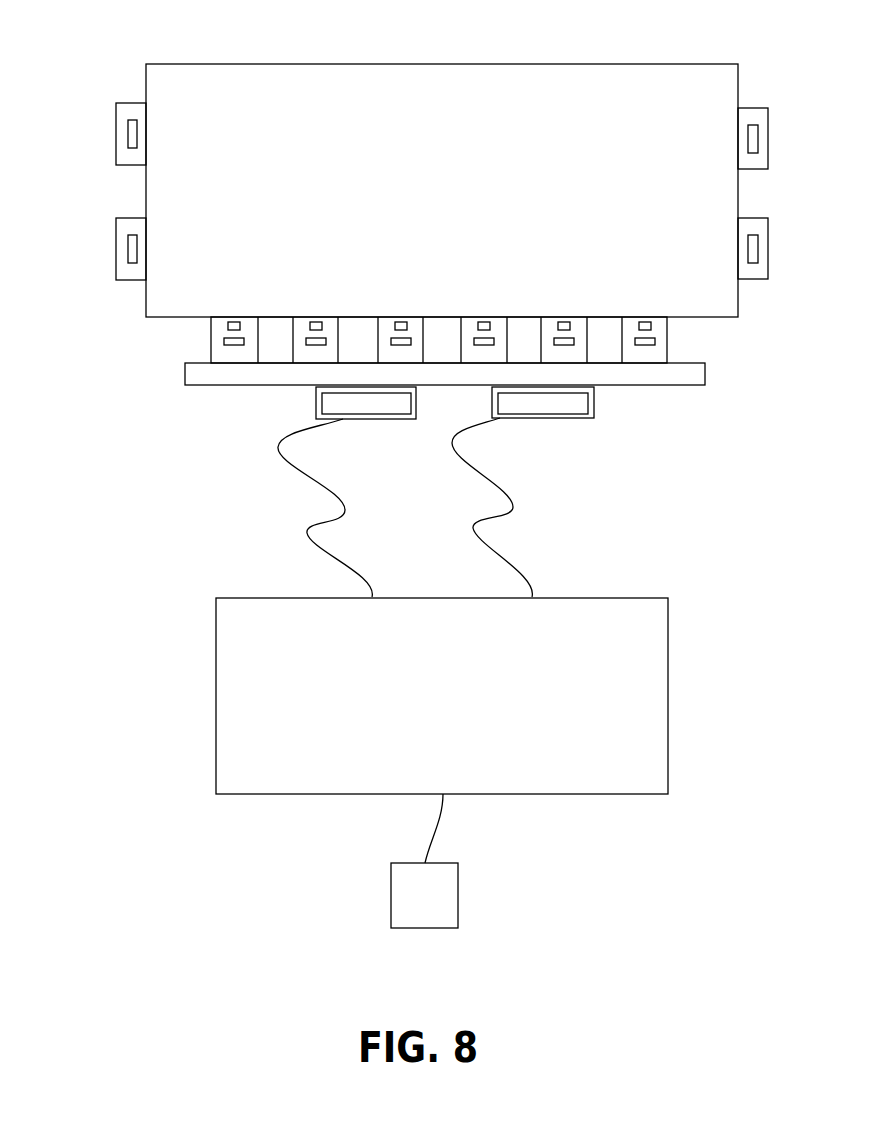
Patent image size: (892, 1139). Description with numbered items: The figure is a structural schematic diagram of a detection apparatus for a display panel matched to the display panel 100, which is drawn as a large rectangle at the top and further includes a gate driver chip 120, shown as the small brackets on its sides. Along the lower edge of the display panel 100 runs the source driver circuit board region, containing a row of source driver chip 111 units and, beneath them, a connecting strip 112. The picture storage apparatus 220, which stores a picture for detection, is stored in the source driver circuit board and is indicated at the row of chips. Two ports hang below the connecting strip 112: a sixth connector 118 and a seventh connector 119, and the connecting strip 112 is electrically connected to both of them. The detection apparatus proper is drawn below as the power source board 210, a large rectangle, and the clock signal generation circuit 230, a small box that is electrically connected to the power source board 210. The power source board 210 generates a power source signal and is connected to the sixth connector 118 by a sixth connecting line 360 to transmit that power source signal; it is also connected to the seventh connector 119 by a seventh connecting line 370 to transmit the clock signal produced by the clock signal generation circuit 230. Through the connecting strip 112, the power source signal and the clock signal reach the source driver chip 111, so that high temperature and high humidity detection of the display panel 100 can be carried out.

The display panel 100 is at (146, 191).
The gate driver chip 120 is at (135, 103).
The source driver chip 111 is at (211, 340).
The connecting strip 112 is at (185, 377).
The sixth connector 118 is at (316, 402).
The seventh connector 119 is at (594, 405).
The picture storage apparatus 220 is at (651, 327).
The sixth connecting line 360 is at (307, 533).
The seventh connecting line 370 is at (508, 497).
The power source board 210 is at (216, 692).
The clock signal generation circuit 230 is at (454, 902).